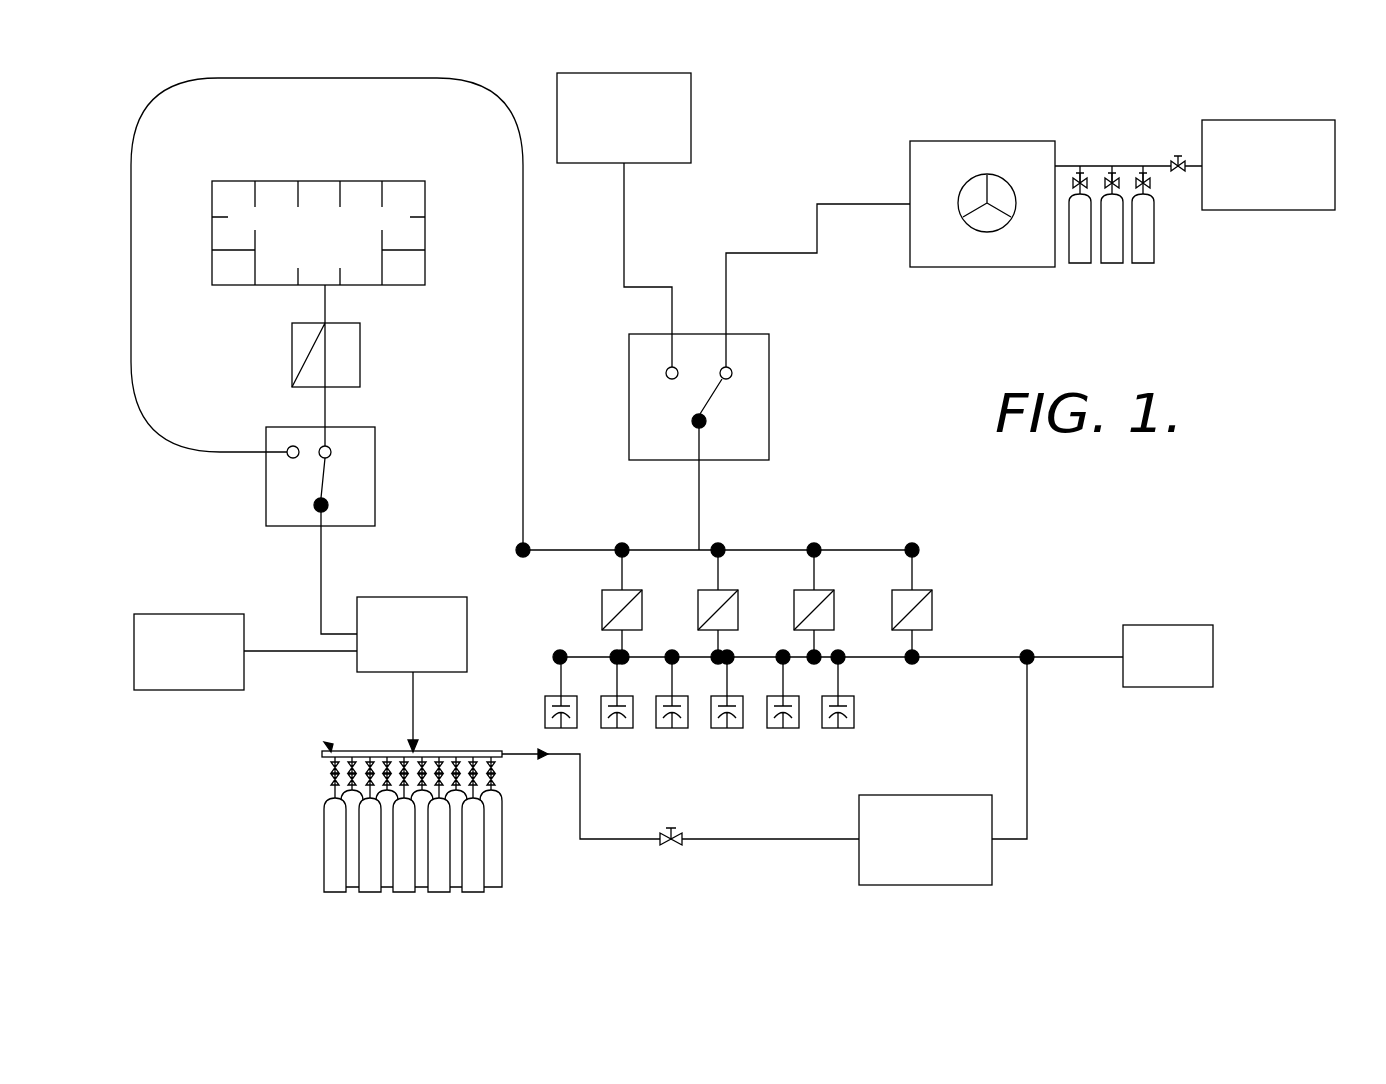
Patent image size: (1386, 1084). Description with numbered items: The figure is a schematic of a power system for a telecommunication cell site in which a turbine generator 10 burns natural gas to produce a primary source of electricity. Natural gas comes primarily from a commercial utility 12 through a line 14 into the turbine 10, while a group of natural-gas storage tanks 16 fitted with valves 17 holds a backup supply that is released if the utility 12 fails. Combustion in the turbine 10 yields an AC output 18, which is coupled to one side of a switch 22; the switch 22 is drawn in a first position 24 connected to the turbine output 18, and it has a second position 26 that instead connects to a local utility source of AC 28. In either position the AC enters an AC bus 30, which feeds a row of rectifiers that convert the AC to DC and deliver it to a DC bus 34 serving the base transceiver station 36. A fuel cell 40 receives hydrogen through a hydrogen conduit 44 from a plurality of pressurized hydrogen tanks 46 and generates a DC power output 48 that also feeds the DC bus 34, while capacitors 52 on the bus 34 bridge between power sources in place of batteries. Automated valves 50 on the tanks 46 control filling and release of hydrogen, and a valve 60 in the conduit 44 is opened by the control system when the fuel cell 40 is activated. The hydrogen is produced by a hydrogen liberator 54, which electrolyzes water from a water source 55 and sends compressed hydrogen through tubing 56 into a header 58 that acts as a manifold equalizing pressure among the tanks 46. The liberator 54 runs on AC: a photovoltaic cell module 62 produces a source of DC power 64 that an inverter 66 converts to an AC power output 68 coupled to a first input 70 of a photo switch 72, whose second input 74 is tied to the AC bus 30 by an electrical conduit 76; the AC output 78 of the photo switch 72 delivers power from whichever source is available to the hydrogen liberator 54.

The turbine generator 10 is at (977, 141).
The commercial utility 12 is at (1335, 165).
The line 14 is at (1071, 165).
The natural-gas storage tanks 16 is at (1115, 258).
The valves 17 is at (1145, 178).
The AC output 18 is at (840, 203).
The switch 22 is at (769, 405).
The first position 24 is at (733, 373).
The second position 26 is at (665, 373).
The local utility source of AC 28 is at (691, 122).
The AC bus 30 is at (759, 547).
The DC bus 34 is at (877, 660).
The base transceiver station 36 is at (1213, 660).
The fuel cell 40 is at (927, 795).
The hydrogen conduit 44 is at (725, 840).
The pressurized hydrogen tanks 46 is at (350, 842).
The DC power output 48 is at (1028, 738).
The automated valves 50 is at (333, 780).
The capacitors 52 is at (672, 728).
The hydrogen liberator 54 is at (410, 597).
The water source 55 is at (188, 690).
The tubing 56 is at (412, 700).
The header 58 is at (329, 746).
The valve 60 is at (662, 848).
The photovoltaic cell module 62 is at (398, 181).
The source of DC power 64 is at (320, 305).
The inverter 66 is at (360, 351).
The AC power output 68 is at (320, 410).
The first input 70 is at (331, 453).
The photo switch 72 is at (293, 526).
The second input 74 is at (293, 459).
The electrical conduit 76 is at (130, 293).
The AC output 78 is at (320, 597).